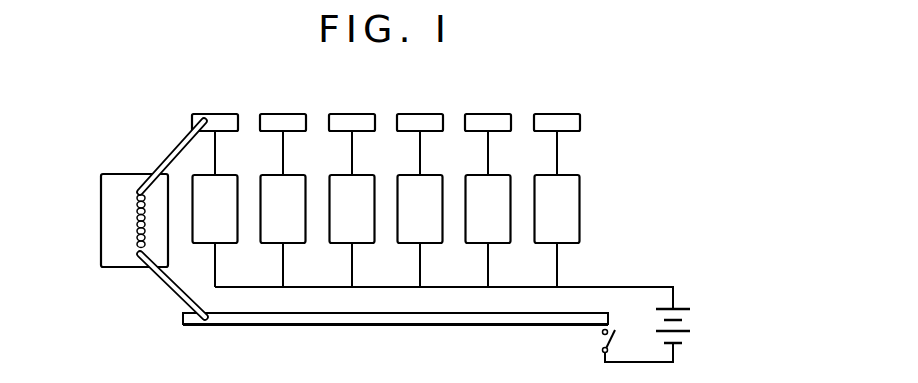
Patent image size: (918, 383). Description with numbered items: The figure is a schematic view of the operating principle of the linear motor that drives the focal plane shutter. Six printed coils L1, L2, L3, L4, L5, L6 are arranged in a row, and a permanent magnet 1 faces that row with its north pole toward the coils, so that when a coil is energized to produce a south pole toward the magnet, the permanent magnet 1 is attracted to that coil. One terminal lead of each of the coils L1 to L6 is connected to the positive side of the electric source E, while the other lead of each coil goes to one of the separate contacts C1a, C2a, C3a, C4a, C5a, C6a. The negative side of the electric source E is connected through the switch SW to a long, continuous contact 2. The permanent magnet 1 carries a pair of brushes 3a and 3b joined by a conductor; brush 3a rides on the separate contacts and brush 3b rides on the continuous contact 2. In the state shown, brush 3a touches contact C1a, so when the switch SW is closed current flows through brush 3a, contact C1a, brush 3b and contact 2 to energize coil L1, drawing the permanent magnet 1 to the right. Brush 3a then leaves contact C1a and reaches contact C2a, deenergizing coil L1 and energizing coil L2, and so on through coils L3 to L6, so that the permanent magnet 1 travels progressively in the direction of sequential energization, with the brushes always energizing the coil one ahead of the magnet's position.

The permanent magnet 1 is at (101, 253).
The long, continuous contact 2 is at (403, 326).
The brush 3a is at (171, 152).
The brush 3b is at (162, 280).
The contact C1a is at (217, 113).
The contact C2a is at (285, 113).
The contact C3a is at (354, 113).
The contact C4a is at (422, 113).
The contact C5a is at (490, 113).
The contact C6a is at (559, 113).
The printed coil L1 is at (230, 220).
The printed coil L2 is at (298, 220).
The printed coil L3 is at (367, 220).
The printed coil L4 is at (435, 220).
The printed coil L5 is at (503, 220).
The printed coil L6 is at (572, 220).
The electric source E is at (690, 327).
The switch SW is at (598, 349).